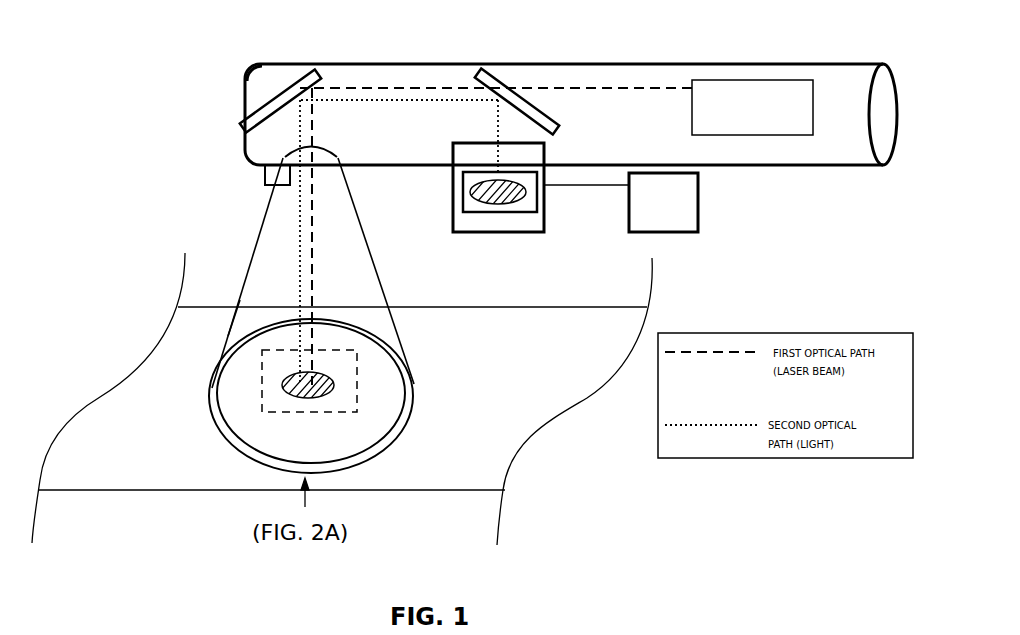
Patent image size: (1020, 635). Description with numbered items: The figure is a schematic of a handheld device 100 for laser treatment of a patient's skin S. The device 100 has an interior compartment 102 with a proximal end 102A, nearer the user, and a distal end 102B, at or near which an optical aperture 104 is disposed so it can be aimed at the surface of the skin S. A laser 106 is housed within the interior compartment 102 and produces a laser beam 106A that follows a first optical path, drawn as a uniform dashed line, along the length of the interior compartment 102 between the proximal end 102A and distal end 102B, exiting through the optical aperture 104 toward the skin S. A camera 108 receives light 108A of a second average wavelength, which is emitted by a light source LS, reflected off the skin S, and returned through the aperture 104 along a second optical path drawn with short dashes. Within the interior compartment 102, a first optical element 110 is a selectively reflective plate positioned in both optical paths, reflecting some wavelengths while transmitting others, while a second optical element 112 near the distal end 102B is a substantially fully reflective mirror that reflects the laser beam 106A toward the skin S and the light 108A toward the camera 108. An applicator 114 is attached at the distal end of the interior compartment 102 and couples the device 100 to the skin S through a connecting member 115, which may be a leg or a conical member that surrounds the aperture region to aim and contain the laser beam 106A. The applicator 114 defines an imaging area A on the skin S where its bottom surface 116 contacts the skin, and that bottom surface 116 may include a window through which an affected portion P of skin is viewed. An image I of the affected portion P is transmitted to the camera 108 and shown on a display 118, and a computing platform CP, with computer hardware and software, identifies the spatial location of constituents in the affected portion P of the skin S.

The device 100 is at (491, 127).
The interior compartment 102 is at (552, 127).
The proximal end 102A is at (882, 178).
The distal end 102B is at (239, 61).
The optical aperture 104 is at (339, 158).
The laser 106 is at (727, 80).
The laser beam 106A is at (570, 88).
The camera 108 is at (502, 199).
The light 108A is at (430, 100).
The first optical element 110 is at (533, 92).
The second optical element 112 is at (291, 72).
The applicator 114 is at (257, 243).
The connecting member 115 is at (227, 328).
The bottom surface 116 is at (233, 445).
The display 118 is at (503, 212).
The light source LS is at (265, 175).
The computing platform CP is at (621, 202).
The image I is at (528, 190).
The affected portion P is at (335, 383).
The imaging area A is at (278, 413).
The skin S is at (150, 480).